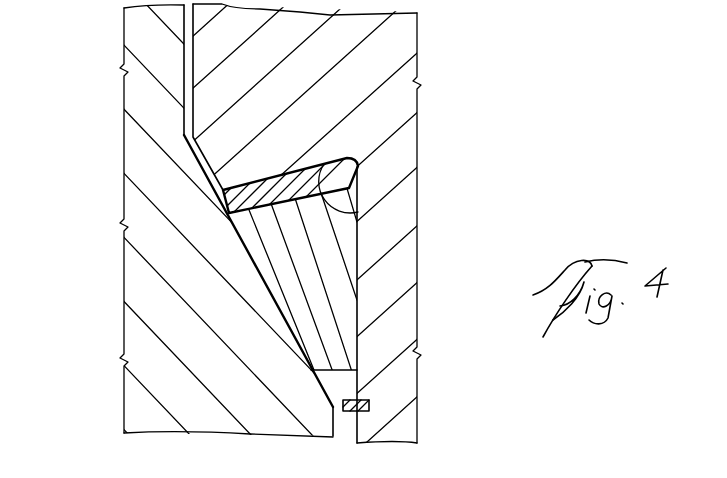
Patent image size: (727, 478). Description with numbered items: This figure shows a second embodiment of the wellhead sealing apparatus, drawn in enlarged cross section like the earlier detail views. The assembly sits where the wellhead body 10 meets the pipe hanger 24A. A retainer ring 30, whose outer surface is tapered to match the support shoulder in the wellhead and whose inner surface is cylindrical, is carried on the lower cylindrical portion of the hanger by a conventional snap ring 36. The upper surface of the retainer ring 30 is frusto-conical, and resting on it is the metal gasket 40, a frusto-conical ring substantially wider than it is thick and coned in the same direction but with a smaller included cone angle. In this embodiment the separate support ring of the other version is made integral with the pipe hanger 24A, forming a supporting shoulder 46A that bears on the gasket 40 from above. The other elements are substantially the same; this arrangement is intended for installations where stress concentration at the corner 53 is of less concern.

The base body 10 is at (143, 260).
The pipe hanger 24A is at (204, 76).
The metal gasket 40 is at (240, 203).
The retainer ring 30 is at (338, 259).
The corner 53 is at (346, 165).
The supporting shoulder 46A is at (357, 211).
The snap ring 36 is at (372, 404).